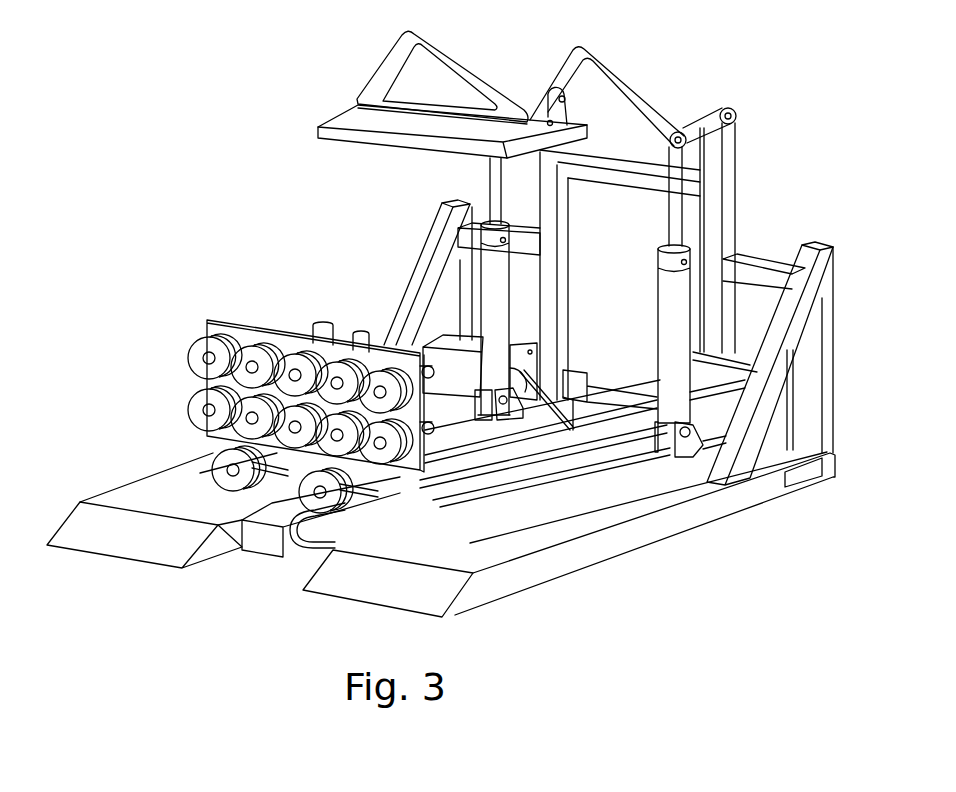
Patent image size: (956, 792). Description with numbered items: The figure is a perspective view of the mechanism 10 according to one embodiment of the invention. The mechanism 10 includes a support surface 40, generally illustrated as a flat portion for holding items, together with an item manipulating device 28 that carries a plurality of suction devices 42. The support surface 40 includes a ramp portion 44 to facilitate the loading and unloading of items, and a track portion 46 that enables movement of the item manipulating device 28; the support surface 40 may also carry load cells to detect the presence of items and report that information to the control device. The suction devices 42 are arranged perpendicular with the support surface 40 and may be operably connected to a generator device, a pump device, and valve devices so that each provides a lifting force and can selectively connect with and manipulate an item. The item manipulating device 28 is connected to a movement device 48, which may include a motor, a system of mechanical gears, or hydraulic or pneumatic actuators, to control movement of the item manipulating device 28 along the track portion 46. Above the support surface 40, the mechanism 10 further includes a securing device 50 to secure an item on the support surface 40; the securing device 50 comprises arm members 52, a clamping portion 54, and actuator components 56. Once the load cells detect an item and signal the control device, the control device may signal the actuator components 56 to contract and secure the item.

The mechanism 10 is at (225, 187).
The item manipulating device 28 is at (305, 338).
The support surface 40 is at (146, 476).
The suction devices 42 is at (262, 335).
The ramp portion 44 is at (56, 527).
The track portion 46 is at (313, 545).
The movement device 48 is at (514, 340).
The securing device 50 is at (637, 100).
The arm members 52 is at (537, 75).
The clamping portion 54 is at (357, 103).
The actuator components 56 is at (663, 287).